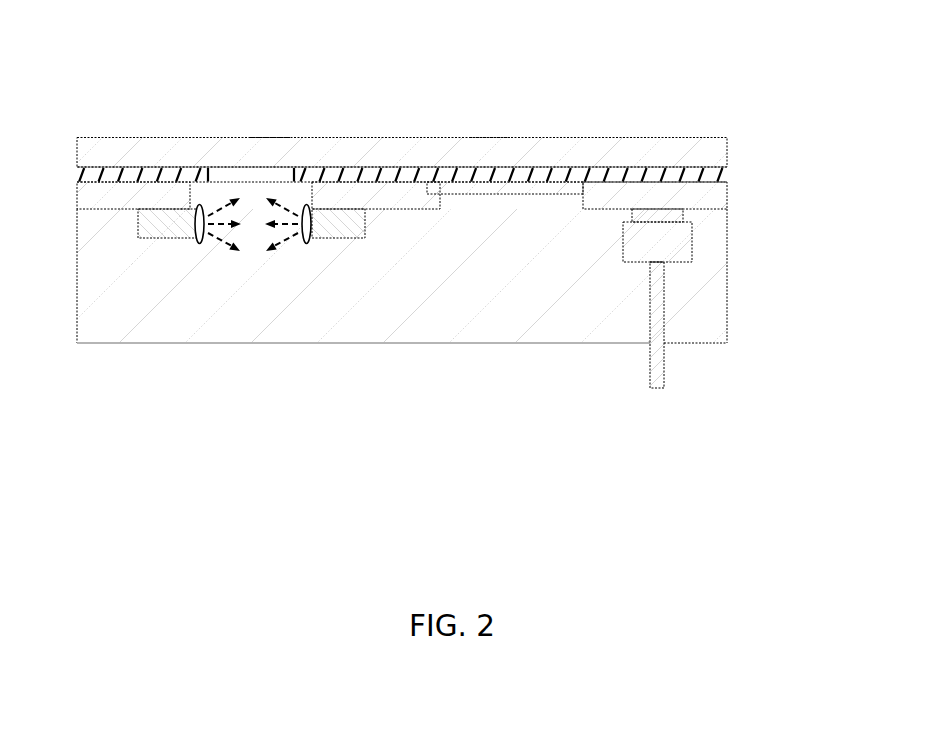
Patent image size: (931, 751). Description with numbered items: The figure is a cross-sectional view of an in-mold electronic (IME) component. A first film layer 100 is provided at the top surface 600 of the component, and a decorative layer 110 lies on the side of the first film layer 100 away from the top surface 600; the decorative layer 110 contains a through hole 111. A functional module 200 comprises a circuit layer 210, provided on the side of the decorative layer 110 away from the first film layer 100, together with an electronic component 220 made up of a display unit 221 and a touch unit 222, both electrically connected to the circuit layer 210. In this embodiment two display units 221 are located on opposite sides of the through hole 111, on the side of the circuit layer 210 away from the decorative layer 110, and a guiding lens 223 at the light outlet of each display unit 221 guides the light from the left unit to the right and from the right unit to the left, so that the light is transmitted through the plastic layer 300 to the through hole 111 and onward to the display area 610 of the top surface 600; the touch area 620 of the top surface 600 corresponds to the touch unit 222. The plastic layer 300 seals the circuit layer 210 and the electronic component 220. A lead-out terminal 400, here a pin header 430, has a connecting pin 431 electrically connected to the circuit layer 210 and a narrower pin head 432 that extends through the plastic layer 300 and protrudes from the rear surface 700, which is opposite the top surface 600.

The first film layer 100 is at (658, 152).
The decorative layer 110 is at (708, 175).
The through hole 111 is at (250, 179).
The functional module 200 is at (482, 477).
The circuit layer 210 is at (90, 187).
The electronic component 220 is at (380, 423).
The display unit 221 is at (160, 223).
The touch unit 222 is at (470, 187).
The guiding lens 223 is at (197, 210).
The plastic layer 300 is at (105, 292).
The lead-out terminal 400 is at (657, 300).
The pin header 430 is at (803, 247).
The connecting pin 431 is at (672, 217).
The pin head 432 is at (655, 375).
The top surface 600 is at (318, 57).
The display area 610 is at (267, 138).
The touch area 620 is at (487, 138).
The rear surface 700 is at (120, 343).